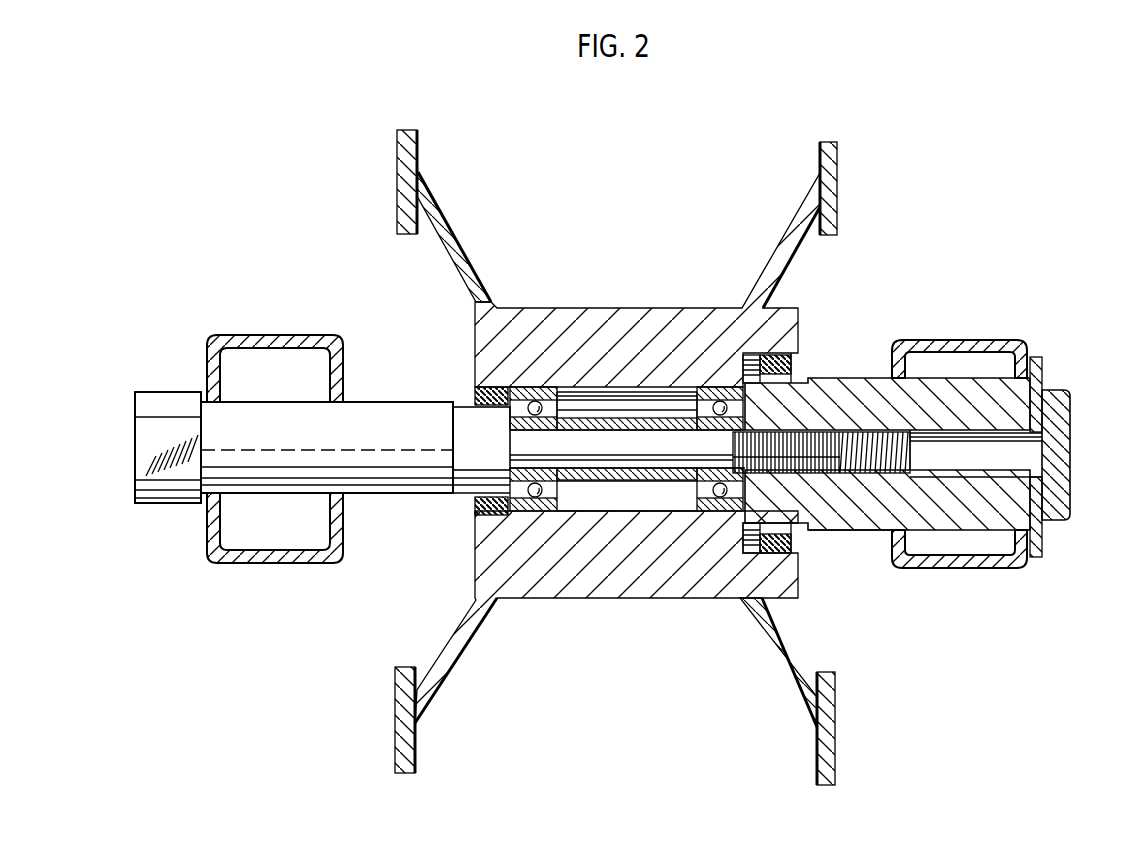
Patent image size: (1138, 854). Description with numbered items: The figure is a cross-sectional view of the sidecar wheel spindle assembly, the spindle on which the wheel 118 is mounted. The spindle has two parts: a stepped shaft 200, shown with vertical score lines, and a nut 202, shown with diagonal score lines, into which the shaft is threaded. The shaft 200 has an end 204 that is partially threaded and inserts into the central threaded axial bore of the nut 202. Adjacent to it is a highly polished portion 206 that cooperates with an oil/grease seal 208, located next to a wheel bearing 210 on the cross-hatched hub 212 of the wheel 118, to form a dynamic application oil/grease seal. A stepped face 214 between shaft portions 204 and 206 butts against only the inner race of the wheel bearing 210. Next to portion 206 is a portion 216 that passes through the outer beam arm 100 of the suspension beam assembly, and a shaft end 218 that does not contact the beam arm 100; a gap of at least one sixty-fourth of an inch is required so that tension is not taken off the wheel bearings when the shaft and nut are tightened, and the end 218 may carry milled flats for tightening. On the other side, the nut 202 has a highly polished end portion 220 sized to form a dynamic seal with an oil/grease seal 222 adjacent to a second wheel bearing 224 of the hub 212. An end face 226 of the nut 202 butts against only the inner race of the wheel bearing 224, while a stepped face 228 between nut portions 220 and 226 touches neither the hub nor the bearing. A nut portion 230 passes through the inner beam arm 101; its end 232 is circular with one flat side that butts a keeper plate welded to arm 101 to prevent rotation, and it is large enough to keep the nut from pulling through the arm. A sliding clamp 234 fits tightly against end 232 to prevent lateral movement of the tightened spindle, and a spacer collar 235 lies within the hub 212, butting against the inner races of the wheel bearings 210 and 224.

The beam arm 100 is at (207, 548).
The beam arm 101 is at (958, 570).
The wheel 118 is at (397, 165).
The stepped shaft 200 is at (398, 401).
The nut 202 is at (862, 375).
The shaft end 204 is at (825, 447).
The highly polished portion 206 is at (470, 497).
The oil/grease seal 208 is at (470, 385).
The wheel bearing 210 is at (548, 412).
The hub 212 is at (581, 322).
The stepped face 214 is at (512, 424).
The shaft portion 216 is at (364, 500).
The shaft end 218 is at (163, 392).
The polished end portion 220 is at (805, 380).
The oil/grease seal 222 is at (802, 380).
The wheel bearing 224 is at (695, 412).
The end face 226 is at (733, 424).
The stepped face 228 is at (727, 387).
The nut portion 230 is at (876, 532).
The nut end 232 is at (1042, 360).
The sliding clamp 234 is at (1070, 402).
The spacer collar 235 is at (643, 423).